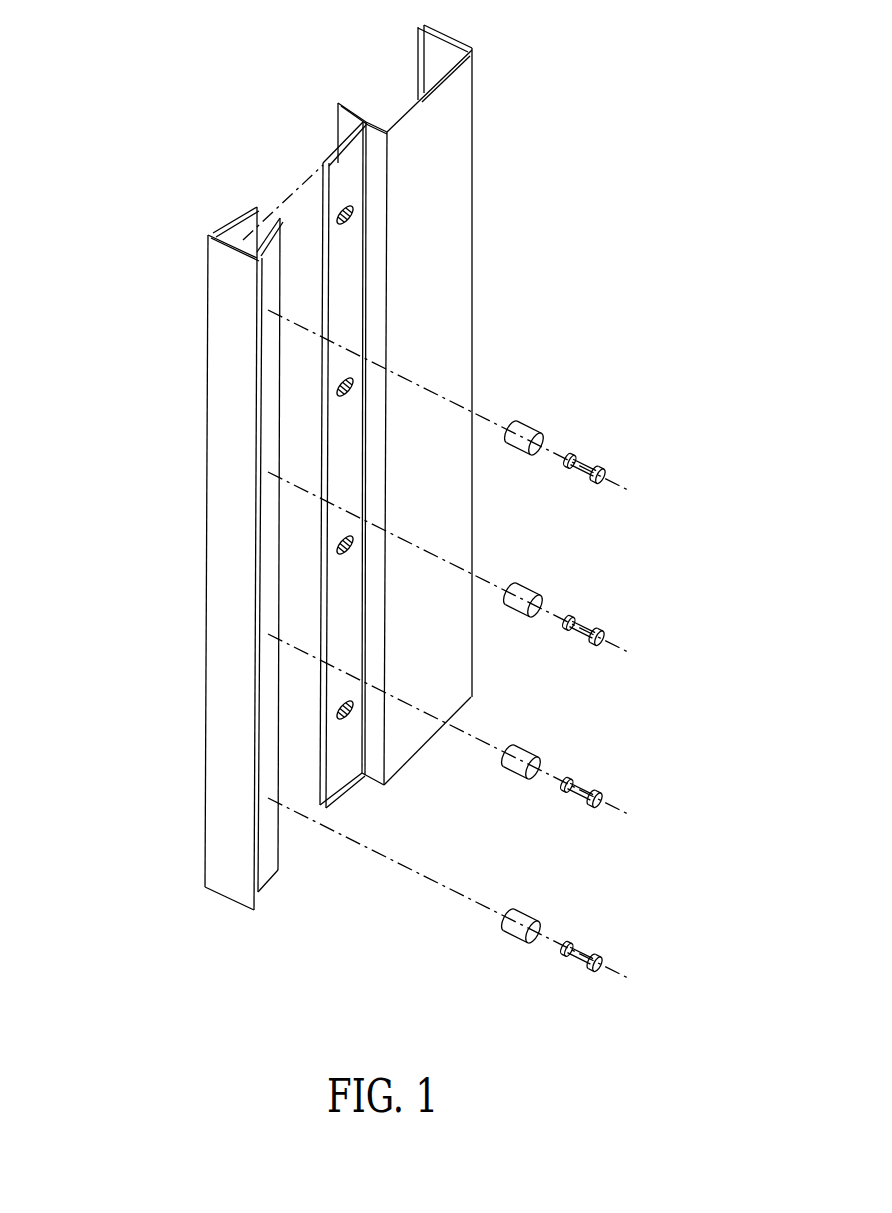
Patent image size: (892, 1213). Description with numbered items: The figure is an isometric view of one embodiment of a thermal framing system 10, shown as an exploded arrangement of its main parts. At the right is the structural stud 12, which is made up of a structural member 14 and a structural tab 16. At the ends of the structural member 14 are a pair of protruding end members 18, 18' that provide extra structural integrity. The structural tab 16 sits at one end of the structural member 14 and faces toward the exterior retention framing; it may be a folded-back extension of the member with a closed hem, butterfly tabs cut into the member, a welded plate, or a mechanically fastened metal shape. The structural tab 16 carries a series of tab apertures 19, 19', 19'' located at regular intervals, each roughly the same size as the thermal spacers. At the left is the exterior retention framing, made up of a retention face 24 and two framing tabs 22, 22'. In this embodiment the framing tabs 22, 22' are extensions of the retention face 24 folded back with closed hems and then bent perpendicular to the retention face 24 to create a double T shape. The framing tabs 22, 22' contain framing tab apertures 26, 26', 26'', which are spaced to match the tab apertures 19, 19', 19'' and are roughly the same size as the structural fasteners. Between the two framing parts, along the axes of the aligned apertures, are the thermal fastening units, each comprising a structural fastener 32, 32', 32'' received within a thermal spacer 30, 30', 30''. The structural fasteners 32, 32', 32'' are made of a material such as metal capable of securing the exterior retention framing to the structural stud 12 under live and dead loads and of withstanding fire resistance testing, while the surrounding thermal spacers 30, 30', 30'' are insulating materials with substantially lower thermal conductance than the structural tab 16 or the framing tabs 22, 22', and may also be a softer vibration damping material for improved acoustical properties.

The thermal framing system 10 is at (582, 157).
The structural stud 12 is at (507, 217).
The structural member 14 is at (435, 277).
The structural tab 16 is at (323, 163).
The protruding end member 18 is at (239, 123).
The protruding end member 18' is at (282, 62).
The tab aperture 19 is at (509, 381).
The tab aperture 19' is at (512, 539).
The tab aperture 19'' is at (515, 703).
The framing tab 22 is at (175, 229).
The framing tab 22' is at (179, 575).
The retention face 24 is at (228, 392).
The framing tab aperture 26 is at (361, 558).
The framing tab aperture 26' is at (360, 720).
The framing tab aperture 26'' is at (359, 884).
The thermal spacer 30 is at (638, 596).
The thermal spacer 30' is at (640, 757).
The thermal spacer 30'' is at (643, 919).
The structural fastener 32 is at (622, 627).
The structural fastener 32' is at (624, 789).
The structural fastener 32'' is at (627, 952).